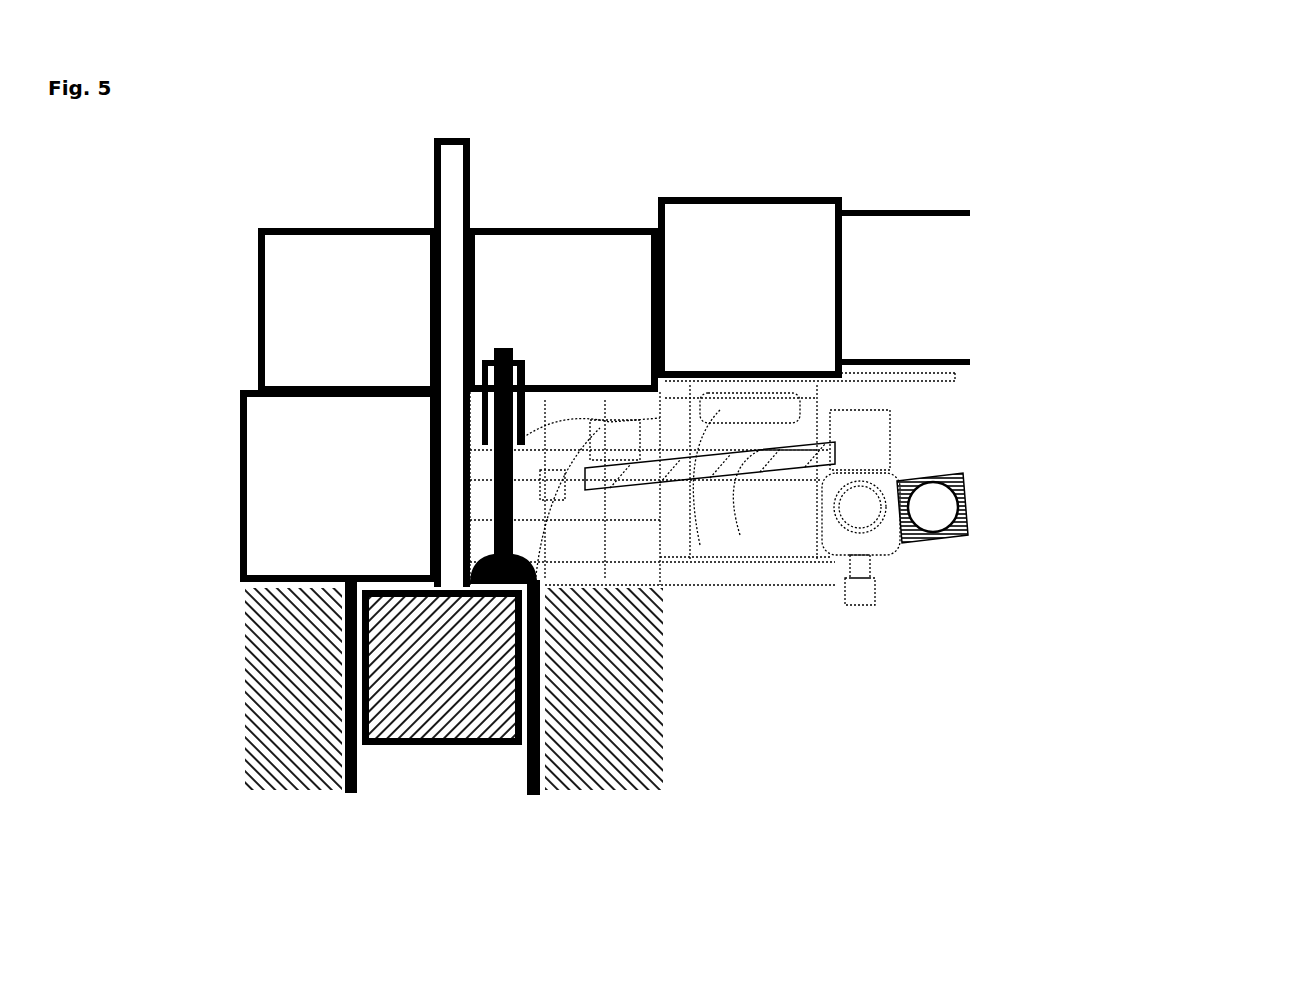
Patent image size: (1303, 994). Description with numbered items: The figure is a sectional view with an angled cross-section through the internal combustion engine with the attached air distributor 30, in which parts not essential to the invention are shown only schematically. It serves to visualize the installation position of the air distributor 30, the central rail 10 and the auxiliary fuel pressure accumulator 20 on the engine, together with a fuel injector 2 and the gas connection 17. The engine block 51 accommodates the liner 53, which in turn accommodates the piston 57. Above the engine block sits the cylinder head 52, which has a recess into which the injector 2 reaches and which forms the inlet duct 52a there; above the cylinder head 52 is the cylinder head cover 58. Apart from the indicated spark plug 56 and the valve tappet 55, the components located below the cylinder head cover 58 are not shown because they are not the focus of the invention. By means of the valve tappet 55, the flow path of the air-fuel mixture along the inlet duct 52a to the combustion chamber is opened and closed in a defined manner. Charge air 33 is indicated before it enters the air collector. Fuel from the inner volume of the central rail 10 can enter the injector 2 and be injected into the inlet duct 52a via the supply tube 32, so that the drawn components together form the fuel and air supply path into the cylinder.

The fuel injector 2 is at (949, 433).
The central rail 10 is at (847, 410).
The gas connection 17 is at (892, 612).
The auxiliary fuel pressure accumulator 20 is at (986, 547).
The air distributor 30 is at (824, 388).
The supply tube 32 is at (699, 480).
The charge air 33 is at (816, 288).
The engine block 51 is at (265, 689).
The cylinder head 52 is at (321, 481).
The inlet duct 52a is at (550, 485).
The liner 53 is at (375, 762).
The valve tappet 55 is at (502, 328).
The spark plug 56 is at (448, 192).
The piston 57 is at (438, 679).
The cylinder head cover 58 is at (296, 321).